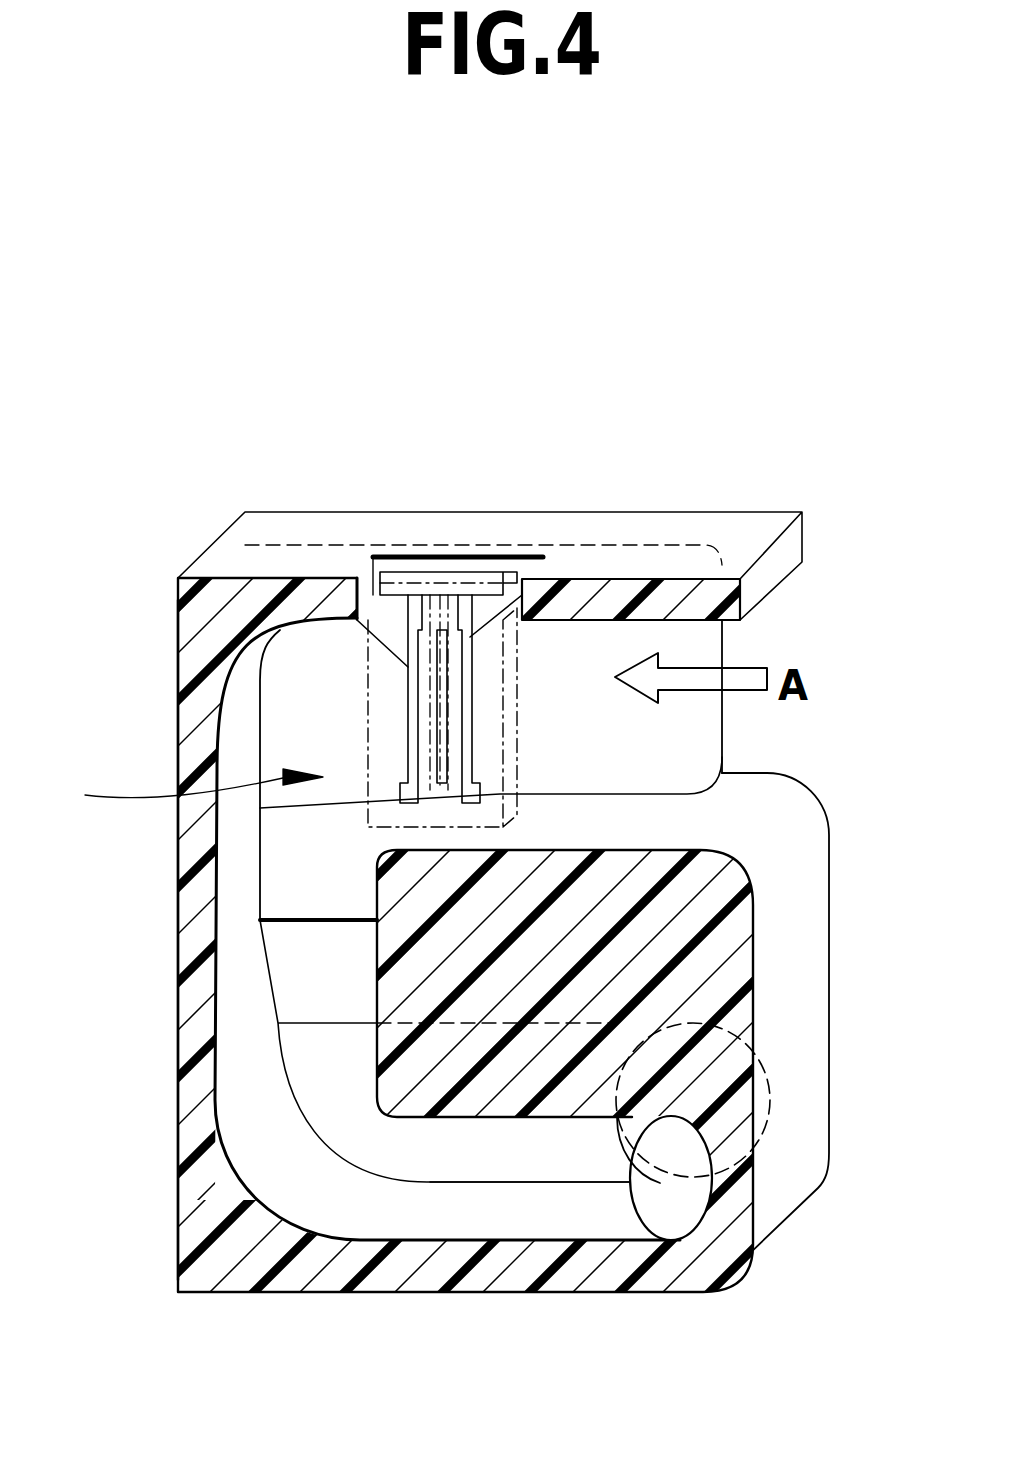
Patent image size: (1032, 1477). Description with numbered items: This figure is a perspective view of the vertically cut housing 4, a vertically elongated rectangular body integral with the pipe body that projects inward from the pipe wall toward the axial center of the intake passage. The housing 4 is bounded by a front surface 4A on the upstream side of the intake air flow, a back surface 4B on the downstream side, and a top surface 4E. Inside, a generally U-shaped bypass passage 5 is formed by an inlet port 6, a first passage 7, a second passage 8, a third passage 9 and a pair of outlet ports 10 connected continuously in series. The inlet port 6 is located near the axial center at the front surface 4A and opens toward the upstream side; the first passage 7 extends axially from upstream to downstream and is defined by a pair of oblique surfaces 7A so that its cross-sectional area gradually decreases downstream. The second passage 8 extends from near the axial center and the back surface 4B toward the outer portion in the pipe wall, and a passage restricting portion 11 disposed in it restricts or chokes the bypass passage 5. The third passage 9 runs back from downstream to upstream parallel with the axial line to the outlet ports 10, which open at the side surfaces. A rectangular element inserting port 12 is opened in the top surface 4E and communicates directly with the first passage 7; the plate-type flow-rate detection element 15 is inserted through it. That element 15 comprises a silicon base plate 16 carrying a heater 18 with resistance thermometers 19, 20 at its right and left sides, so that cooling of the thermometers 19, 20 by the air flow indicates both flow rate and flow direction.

The housing 4 is at (210, 558).
The front surface 4A is at (808, 994).
The back surface 4B is at (178, 962).
The top surface 4E is at (745, 527).
The bypass passage 5 is at (187, 780).
The inlet port 6 is at (673, 740).
The first passage 7 is at (315, 698).
The oblique surface 7A is at (588, 650).
The second passage 8 is at (293, 990).
The third passage 9 is at (496, 1157).
The outlet port 10 is at (677, 1155).
The passage restricting portion 11 is at (290, 913).
The element inserting port 12 is at (373, 557).
The flow-rate detection element 15 is at (407, 545).
The silicon base plate 16 is at (483, 612).
The heater 18 is at (445, 640).
The resistance thermometer 19 is at (522, 612).
The resistance thermometer 20 is at (400, 663).